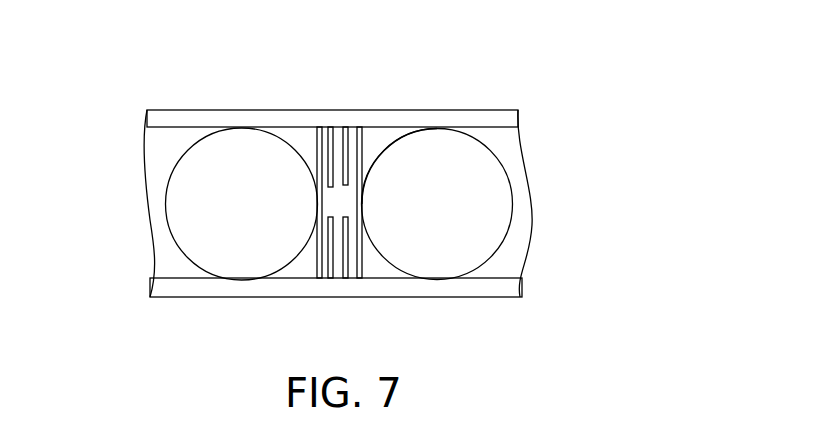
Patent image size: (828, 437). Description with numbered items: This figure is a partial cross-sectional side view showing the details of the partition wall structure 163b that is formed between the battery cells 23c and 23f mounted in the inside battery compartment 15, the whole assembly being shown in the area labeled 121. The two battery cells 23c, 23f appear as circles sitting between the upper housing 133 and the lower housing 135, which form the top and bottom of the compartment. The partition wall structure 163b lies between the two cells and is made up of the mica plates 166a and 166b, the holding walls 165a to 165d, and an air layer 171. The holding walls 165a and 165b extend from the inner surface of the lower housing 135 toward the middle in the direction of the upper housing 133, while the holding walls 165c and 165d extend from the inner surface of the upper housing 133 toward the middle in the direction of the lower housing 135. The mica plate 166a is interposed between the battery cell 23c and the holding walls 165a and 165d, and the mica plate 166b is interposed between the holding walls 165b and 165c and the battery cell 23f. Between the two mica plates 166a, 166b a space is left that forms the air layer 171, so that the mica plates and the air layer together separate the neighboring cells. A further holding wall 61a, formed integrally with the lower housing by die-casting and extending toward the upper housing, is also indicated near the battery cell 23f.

The link plate 121 is at (157, 68).
The inside battery compartment 15 is at (171, 267).
The battery cell 23c is at (222, 190).
The battery cell 23f is at (492, 187).
The holding wall 61a is at (388, 134).
The upper housing 133 is at (472, 297).
The lower housing 135 is at (518, 110).
The partition wall structure 163b is at (337, 103).
The holding wall 165a is at (330, 187).
The holding wall 165b is at (345, 185).
The holding wall 165c is at (345, 272).
The holding wall 165d is at (332, 272).
The mica plate 166a is at (322, 130).
The mica plate 166b is at (355, 128).
The air layer 171 is at (340, 203).